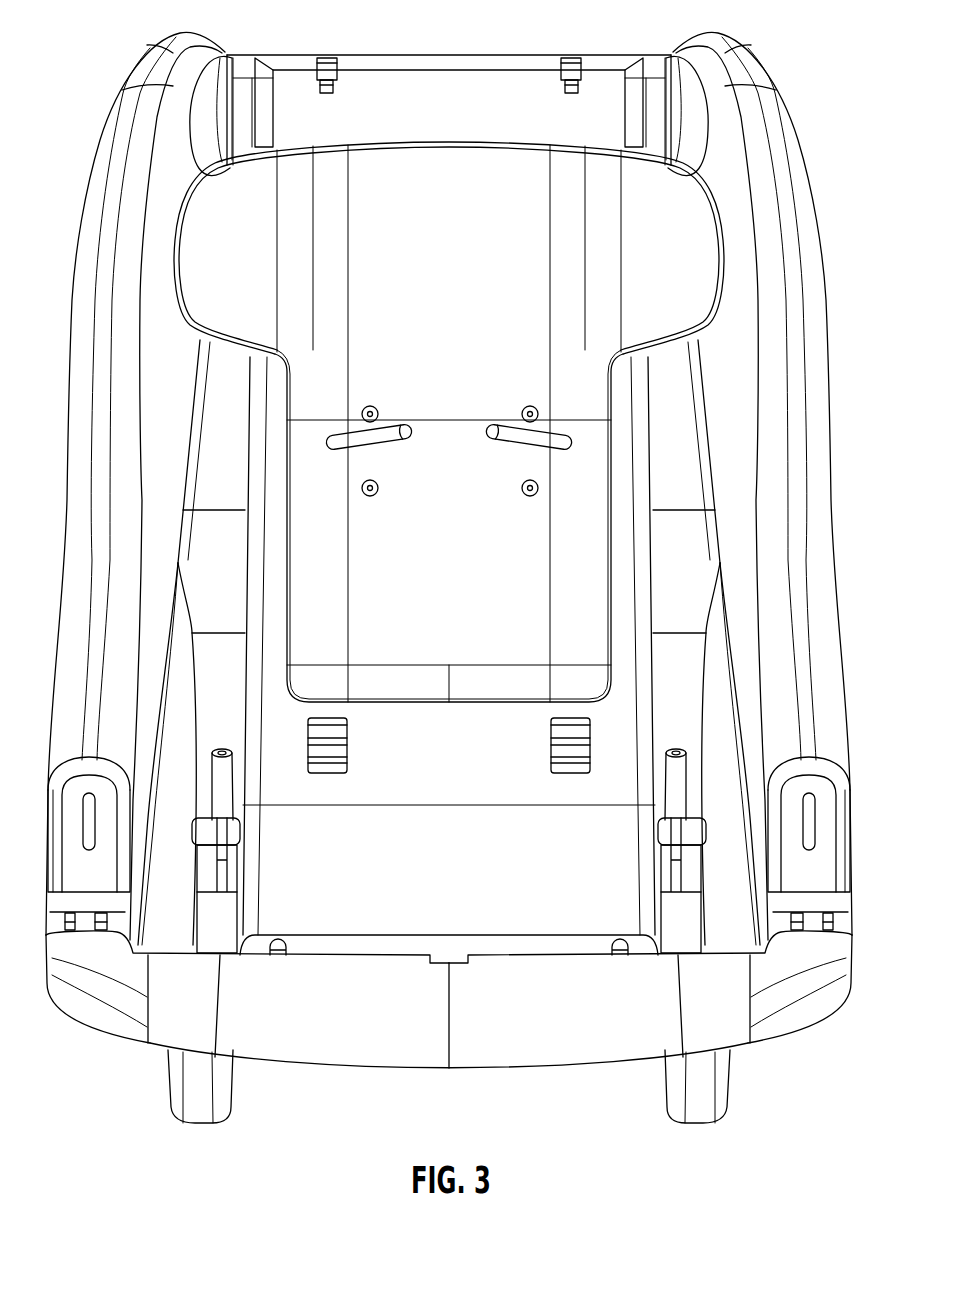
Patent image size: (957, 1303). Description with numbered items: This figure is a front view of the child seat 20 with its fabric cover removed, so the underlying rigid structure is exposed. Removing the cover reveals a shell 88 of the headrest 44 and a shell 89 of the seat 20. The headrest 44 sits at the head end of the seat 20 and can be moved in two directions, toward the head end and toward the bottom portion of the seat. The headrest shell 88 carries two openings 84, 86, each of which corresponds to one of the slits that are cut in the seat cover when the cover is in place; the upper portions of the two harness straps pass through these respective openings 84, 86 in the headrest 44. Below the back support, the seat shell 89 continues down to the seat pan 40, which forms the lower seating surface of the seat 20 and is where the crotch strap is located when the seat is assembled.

The seat 20 is at (398, 78).
The headrest 44 is at (443, 163).
The shell of the headrest 88 is at (436, 284).
The opening 84 is at (398, 421).
The opening 86 is at (500, 421).
The shell of the seat 89 is at (436, 773).
The seat pan 40 is at (530, 957).